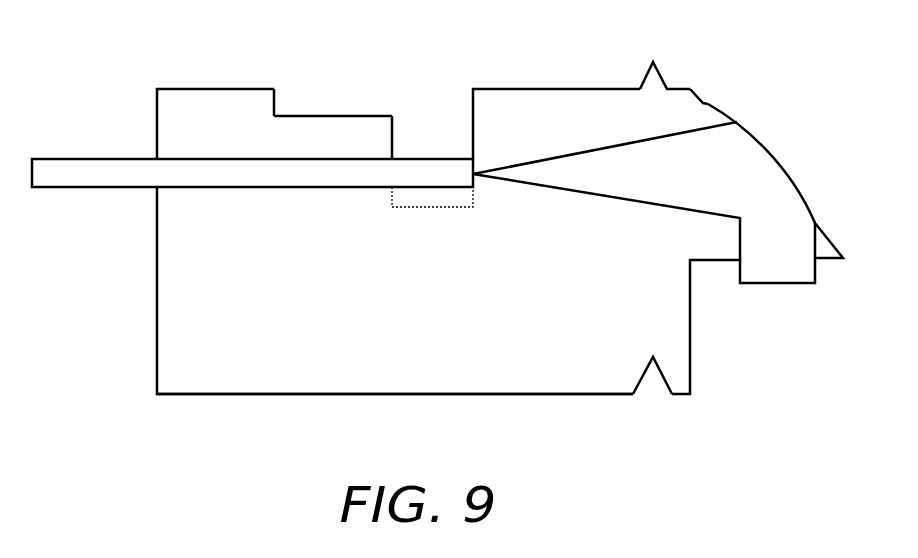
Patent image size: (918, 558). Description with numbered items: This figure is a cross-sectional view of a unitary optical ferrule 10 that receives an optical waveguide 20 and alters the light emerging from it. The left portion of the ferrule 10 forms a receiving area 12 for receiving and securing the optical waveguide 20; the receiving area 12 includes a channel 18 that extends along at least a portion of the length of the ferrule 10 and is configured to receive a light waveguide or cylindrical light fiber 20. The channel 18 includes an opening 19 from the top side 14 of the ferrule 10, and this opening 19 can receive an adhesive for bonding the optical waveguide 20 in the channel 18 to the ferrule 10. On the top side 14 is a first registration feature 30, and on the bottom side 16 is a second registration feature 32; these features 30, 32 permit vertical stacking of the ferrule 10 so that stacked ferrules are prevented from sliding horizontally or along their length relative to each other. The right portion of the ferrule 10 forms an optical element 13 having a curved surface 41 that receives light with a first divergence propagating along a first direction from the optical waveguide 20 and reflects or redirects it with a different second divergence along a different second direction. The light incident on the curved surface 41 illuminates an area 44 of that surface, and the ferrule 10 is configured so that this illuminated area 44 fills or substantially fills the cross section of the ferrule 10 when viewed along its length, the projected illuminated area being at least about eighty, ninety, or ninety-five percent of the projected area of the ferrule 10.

The ferrule 10 is at (292, 404).
The receiving area 12 is at (295, 116).
The optical element 13 is at (583, 88).
The top side 14 is at (525, 88).
The bottom side 16 is at (578, 396).
The channel 18 is at (358, 159).
The opening 19 is at (393, 127).
The optical waveguide 20 is at (85, 173).
The first registration feature 30 is at (657, 74).
The second registration feature 32 is at (668, 380).
The curved surface 41 is at (728, 112).
The illuminated area 44 is at (791, 177).